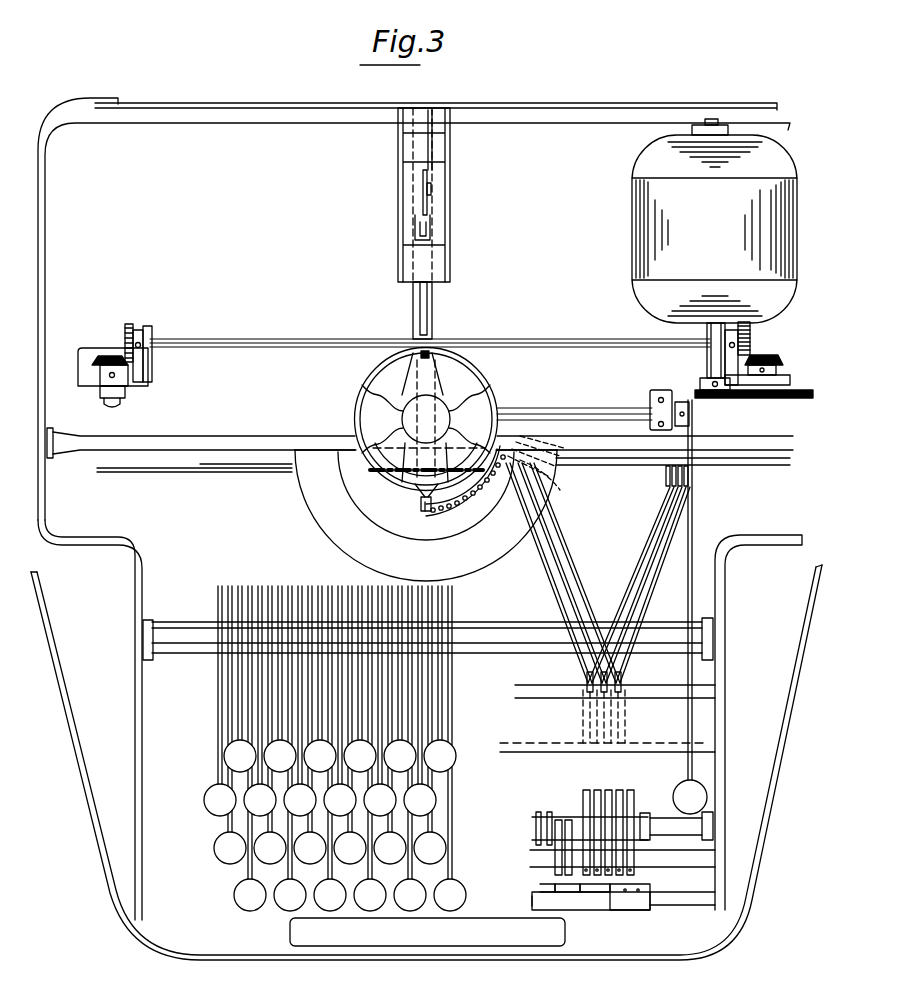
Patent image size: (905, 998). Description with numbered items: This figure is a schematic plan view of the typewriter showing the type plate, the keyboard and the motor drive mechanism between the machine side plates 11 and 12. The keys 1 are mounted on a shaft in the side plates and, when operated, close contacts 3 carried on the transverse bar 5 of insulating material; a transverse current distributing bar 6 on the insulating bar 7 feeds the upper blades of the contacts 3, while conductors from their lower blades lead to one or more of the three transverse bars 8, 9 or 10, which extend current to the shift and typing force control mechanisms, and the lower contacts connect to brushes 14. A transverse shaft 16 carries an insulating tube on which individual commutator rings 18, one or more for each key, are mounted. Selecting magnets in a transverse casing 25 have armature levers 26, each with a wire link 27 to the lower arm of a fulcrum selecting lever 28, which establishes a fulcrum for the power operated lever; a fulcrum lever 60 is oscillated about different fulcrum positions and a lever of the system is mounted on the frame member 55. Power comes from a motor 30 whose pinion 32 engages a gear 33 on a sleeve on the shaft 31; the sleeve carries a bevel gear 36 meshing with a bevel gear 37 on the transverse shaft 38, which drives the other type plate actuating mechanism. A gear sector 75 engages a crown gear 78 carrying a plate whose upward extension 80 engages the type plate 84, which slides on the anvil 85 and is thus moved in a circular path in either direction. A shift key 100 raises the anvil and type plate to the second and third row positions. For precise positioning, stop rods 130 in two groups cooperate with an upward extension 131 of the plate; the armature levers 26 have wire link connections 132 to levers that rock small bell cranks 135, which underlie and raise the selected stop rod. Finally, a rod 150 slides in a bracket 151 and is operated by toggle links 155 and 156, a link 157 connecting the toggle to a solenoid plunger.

The keys 1 is at (224, 752).
The contacts 3 is at (630, 790).
The transverse bar 5 is at (660, 860).
The transverse current distributing bar 6 is at (632, 902).
The bar 7 is at (568, 905).
The transverse bar 8 is at (604, 892).
The transverse bar 9 is at (590, 893).
The transverse bar 10 is at (540, 892).
The machine side plate 11 is at (135, 700).
The machine side plate 12 is at (726, 676).
The brushes 14 is at (546, 857).
The transverse shaft 16 is at (664, 818).
The commutator rings 18 is at (532, 830).
The transverse casing 25 is at (549, 745).
The armature lever 26 is at (587, 678).
The wire link 27 is at (648, 580).
The fulcrum selecting lever 28 is at (666, 484).
The motor 30 is at (638, 216).
The shaft 31 is at (707, 350).
The pinion 32 is at (700, 385).
The gear 33 is at (778, 399).
The bevel gear 36 is at (775, 357).
The bevel gear 37 is at (752, 334).
The transverse shaft 38 is at (596, 338).
The frame member 55 is at (198, 436).
The fulcrum lever 60 is at (215, 473).
The gear sector 75 is at (393, 478).
The crown gear 78 is at (400, 444).
The upward extension 80 is at (418, 368).
The type plate 84 is at (478, 364).
The anvil 85 is at (492, 410).
The shift key 100 is at (704, 792).
The stop rods 130 is at (503, 484).
The upward extension 131 is at (424, 512).
The wire link connection 132 is at (580, 604).
The bell cranks 135 is at (510, 528).
The rod 150 is at (428, 312).
The bracket 151 is at (440, 265).
The toggle link 155 is at (426, 208).
The toggle link 156 is at (432, 143).
The link 157 is at (430, 183).